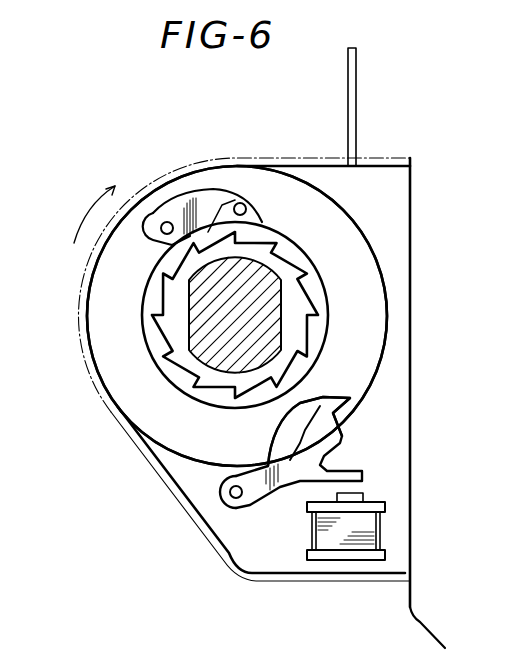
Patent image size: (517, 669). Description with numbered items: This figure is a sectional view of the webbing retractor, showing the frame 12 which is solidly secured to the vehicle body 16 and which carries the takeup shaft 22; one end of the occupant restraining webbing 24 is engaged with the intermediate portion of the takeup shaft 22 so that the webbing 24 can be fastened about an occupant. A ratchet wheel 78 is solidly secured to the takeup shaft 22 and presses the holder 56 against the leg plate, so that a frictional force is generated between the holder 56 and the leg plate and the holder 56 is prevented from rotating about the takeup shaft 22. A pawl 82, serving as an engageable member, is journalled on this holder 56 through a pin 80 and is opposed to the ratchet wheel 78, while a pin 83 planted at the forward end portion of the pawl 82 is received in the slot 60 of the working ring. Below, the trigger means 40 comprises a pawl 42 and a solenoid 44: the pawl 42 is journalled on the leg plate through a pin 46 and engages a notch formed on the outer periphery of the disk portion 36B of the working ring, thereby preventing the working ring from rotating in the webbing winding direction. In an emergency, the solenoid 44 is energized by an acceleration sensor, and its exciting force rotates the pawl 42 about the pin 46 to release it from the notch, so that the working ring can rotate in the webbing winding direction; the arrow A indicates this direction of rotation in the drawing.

The frame 12 is at (410, 252).
The vehicle body 16 is at (416, 611).
The takeup shaft 22 is at (280, 337).
The occupant restraining webbing 24 is at (357, 118).
The disk portion 36B is at (340, 410).
The trigger means 40 is at (386, 494).
The pawl 42 is at (280, 488).
The solenoid 44 is at (380, 526).
The pin 46 is at (237, 498).
The holder 56 is at (340, 224).
The slot 60 is at (242, 206).
The ratchet wheel 78 is at (302, 289).
The pin 80 is at (160, 235).
The pawl 82 is at (214, 218).
The pin 83 is at (246, 210).
The direction of rotation A is at (94, 208).